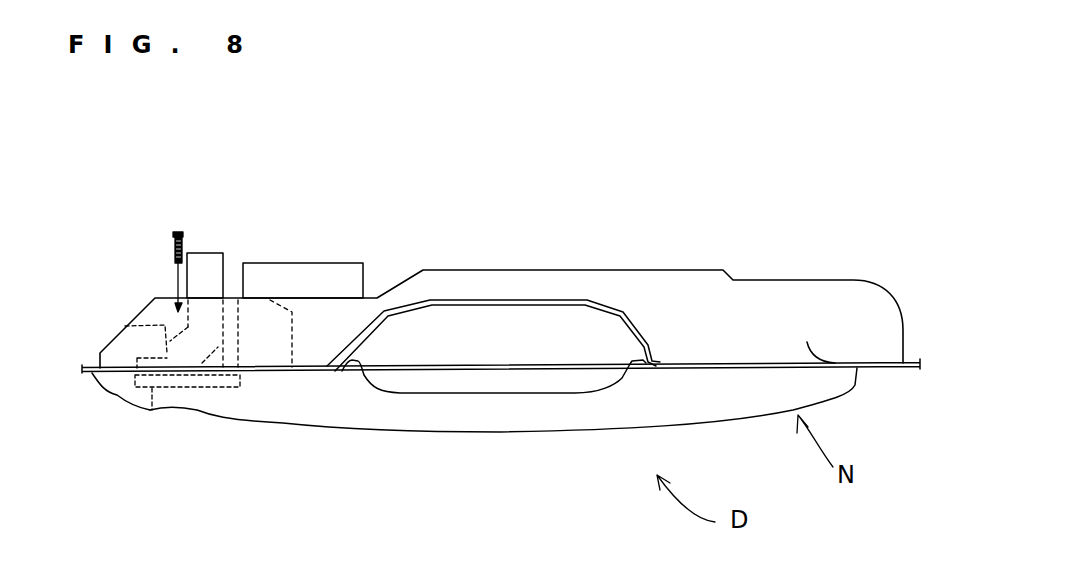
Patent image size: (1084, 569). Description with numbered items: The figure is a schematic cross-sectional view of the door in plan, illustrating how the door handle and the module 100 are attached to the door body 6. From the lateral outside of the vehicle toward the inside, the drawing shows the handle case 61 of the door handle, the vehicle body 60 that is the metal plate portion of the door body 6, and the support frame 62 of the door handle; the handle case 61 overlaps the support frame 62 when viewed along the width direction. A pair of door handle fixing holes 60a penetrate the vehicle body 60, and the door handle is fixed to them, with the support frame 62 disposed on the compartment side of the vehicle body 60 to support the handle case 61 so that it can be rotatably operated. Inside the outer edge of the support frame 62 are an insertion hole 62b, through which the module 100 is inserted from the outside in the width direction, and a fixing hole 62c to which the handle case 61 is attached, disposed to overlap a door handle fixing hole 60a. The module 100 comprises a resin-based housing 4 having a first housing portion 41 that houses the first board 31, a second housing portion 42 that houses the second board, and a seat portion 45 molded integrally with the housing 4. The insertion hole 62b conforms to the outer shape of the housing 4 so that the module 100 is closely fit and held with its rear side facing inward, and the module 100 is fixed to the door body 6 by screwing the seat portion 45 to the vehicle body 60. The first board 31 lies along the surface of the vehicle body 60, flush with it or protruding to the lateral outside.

The module 100 is at (501, 250).
The housing 4 is at (227, 243).
The second housing portion 42 is at (218, 262).
The fixing hole 62c is at (270, 297).
The seat portion 45 is at (122, 328).
The door body 6 is at (905, 375).
The insertion hole 62b is at (193, 390).
The first board 31 is at (152, 410).
The first housing portion 41 is at (118, 390).
The handle case 61 is at (502, 425).
The vehicle body 60 is at (478, 305).
The door handle fixing hole 60a is at (277, 373).
The support frame 62 is at (683, 287).